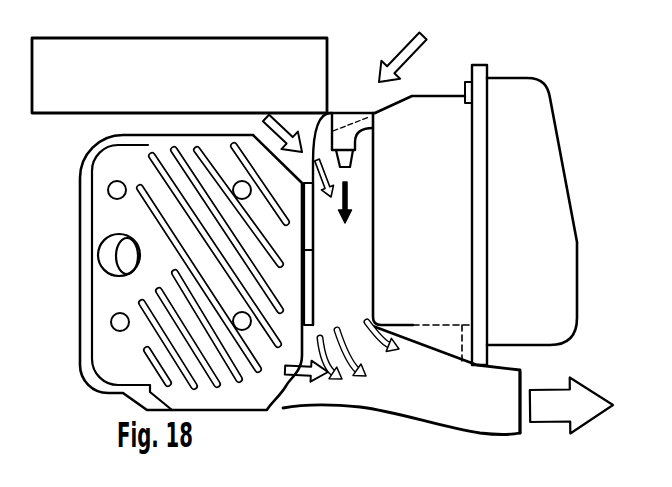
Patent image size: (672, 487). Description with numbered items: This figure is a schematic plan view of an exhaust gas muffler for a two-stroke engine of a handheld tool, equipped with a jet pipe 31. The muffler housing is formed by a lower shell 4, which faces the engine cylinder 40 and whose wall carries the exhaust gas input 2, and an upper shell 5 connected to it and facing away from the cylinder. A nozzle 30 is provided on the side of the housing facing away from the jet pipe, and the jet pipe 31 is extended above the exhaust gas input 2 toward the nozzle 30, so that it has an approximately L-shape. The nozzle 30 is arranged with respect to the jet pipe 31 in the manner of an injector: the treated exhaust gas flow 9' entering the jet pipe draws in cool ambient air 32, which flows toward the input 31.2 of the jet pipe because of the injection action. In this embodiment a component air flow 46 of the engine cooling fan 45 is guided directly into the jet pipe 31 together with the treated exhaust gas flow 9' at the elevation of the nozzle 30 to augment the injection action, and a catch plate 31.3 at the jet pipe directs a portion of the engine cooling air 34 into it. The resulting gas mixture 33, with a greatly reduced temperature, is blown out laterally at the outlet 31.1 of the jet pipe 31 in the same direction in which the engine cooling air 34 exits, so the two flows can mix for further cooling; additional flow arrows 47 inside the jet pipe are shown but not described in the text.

The engine cooling fan 45 is at (185, 92).
The component air flow 46 is at (284, 116).
The input of the jet pipe 31.2 is at (337, 112).
The cool ambient air 32 is at (427, 42).
The nozzle 30 is at (373, 126).
The treated exhaust gas flow 9' is at (368, 201).
The lower shell 4 is at (433, 215).
The upper shell 5 is at (528, 215).
The exhaust gas input 2 is at (305, 263).
The engine cylinder 40 is at (80, 308).
The engine cooling air 34 is at (266, 412).
The catch plate 31.3 is at (311, 408).
The air flow 47 is at (376, 375).
The jet pipe 31 is at (432, 397).
The gas mixture 33 is at (550, 402).
The outlet of the jet pipe 31.1 is at (522, 434).